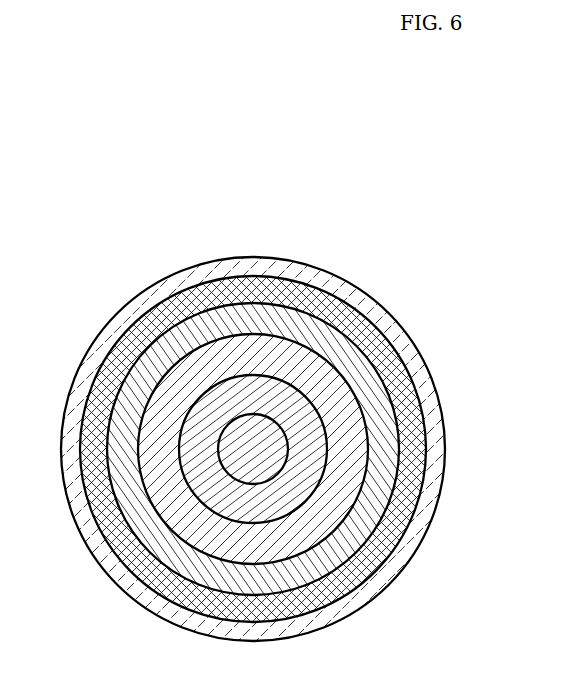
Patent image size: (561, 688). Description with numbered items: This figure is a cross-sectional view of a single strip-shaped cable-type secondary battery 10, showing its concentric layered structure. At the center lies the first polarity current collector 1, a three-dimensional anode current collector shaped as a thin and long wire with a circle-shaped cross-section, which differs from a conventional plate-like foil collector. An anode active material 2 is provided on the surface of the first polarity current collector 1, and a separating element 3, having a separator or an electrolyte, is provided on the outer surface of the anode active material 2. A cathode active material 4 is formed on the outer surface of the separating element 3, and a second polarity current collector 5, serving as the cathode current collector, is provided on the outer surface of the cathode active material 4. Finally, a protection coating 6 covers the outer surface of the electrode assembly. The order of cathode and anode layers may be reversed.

The cable-type secondary battery 10 is at (82, 306).
The first polarity current collector 1 is at (277, 450).
The anode active material 2 is at (292, 408).
The separating element 3 is at (317, 367).
The cathode active material 4 is at (330, 333).
The second polarity current collector 5 is at (328, 303).
The protection coating 6 is at (318, 278).